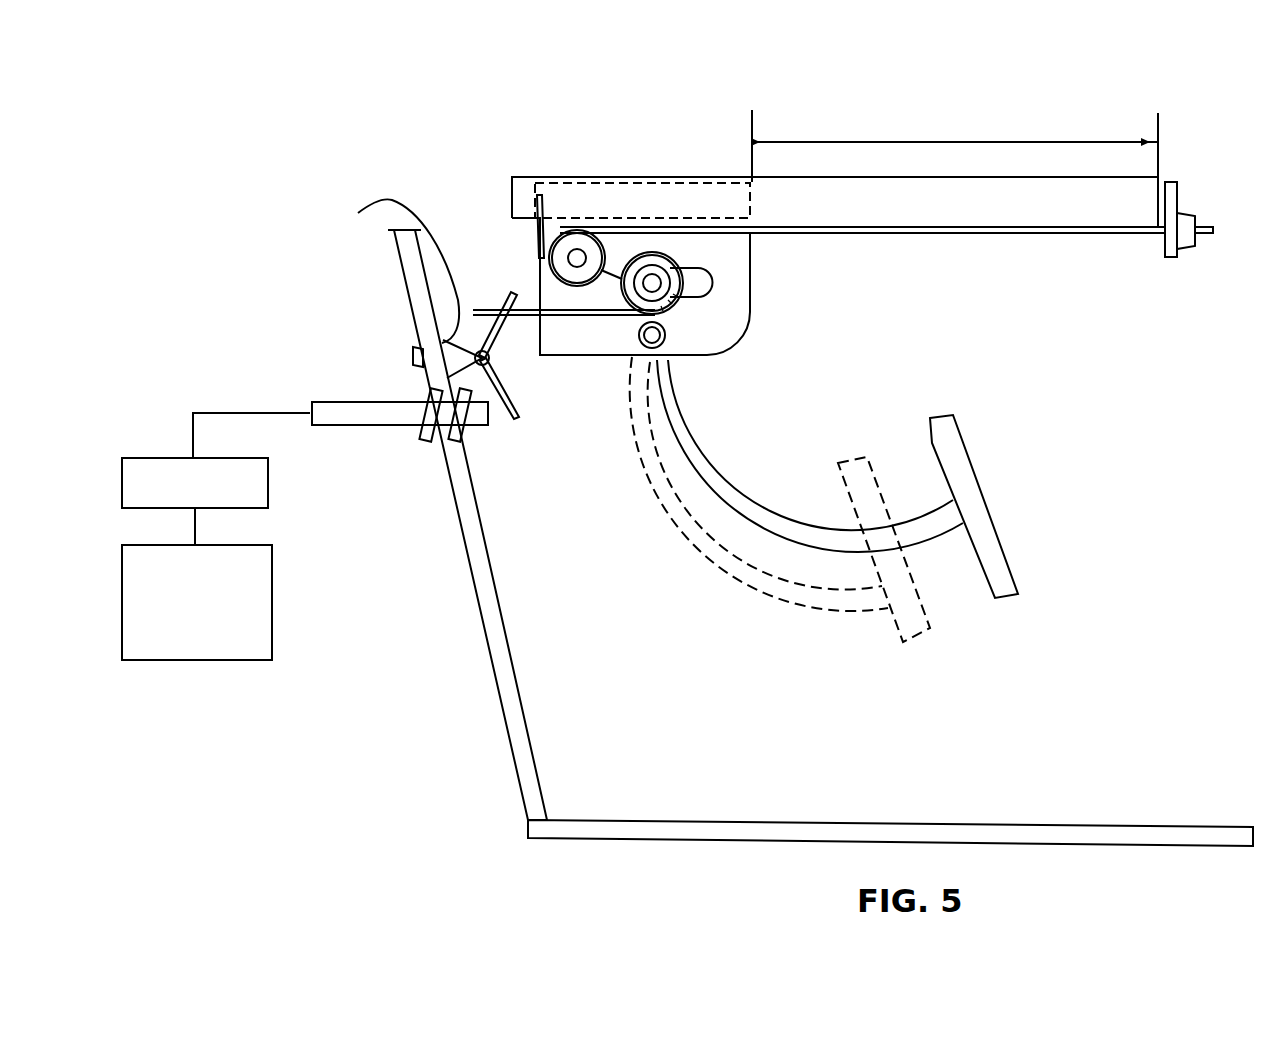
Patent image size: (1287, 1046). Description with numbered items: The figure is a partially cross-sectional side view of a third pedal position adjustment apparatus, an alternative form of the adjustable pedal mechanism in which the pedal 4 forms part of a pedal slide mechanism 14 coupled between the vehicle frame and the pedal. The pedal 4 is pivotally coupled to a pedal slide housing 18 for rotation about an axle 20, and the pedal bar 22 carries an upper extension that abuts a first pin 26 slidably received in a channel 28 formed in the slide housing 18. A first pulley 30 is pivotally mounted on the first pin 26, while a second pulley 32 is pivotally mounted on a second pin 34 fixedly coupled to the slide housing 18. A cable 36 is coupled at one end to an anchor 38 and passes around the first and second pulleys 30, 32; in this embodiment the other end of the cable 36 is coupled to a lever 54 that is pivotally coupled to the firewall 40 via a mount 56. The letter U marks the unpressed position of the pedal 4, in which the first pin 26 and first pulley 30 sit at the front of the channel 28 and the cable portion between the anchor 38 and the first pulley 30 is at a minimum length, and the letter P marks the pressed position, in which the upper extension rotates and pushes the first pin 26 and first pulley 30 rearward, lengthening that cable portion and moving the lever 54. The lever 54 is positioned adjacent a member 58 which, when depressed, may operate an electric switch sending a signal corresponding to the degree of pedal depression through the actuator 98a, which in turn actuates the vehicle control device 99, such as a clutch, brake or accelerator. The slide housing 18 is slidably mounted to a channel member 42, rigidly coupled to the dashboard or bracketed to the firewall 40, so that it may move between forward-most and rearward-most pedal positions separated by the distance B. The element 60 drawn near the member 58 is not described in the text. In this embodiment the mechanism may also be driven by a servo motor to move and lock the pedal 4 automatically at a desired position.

The pedal 4 is at (1010, 545).
The pedal slide mechanism 14 is at (533, 405).
The pedal slide housing 18 is at (740, 302).
The axle 20 is at (680, 349).
The pedal bar 22 is at (667, 503).
The first pin 26 is at (692, 268).
The channel 28 is at (705, 282).
The first pulley 30 is at (657, 252).
The second pulley 32 is at (548, 258).
The second pin 34 is at (578, 252).
The cable 36 is at (1060, 240).
The anchor 38 is at (1200, 238).
The firewall 40 is at (475, 580).
The channel member 42 is at (1138, 197).
The lever 54 is at (508, 296).
The mount 56 is at (491, 271).
The member 58 is at (480, 423).
The bar 60 is at (370, 403).
The actuator 98a is at (268, 497).
The vehicle control device 99 is at (272, 610).
The distance B is at (915, 142).
The pressed position P is at (888, 465).
The unpressed position U is at (998, 490).